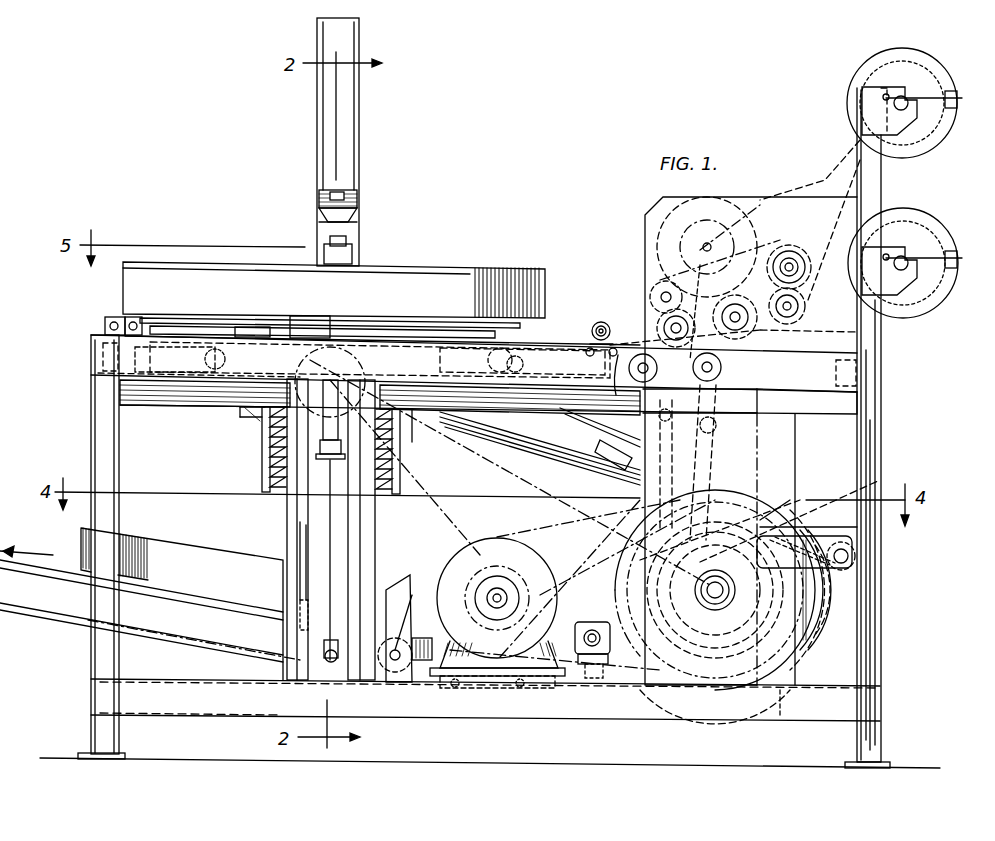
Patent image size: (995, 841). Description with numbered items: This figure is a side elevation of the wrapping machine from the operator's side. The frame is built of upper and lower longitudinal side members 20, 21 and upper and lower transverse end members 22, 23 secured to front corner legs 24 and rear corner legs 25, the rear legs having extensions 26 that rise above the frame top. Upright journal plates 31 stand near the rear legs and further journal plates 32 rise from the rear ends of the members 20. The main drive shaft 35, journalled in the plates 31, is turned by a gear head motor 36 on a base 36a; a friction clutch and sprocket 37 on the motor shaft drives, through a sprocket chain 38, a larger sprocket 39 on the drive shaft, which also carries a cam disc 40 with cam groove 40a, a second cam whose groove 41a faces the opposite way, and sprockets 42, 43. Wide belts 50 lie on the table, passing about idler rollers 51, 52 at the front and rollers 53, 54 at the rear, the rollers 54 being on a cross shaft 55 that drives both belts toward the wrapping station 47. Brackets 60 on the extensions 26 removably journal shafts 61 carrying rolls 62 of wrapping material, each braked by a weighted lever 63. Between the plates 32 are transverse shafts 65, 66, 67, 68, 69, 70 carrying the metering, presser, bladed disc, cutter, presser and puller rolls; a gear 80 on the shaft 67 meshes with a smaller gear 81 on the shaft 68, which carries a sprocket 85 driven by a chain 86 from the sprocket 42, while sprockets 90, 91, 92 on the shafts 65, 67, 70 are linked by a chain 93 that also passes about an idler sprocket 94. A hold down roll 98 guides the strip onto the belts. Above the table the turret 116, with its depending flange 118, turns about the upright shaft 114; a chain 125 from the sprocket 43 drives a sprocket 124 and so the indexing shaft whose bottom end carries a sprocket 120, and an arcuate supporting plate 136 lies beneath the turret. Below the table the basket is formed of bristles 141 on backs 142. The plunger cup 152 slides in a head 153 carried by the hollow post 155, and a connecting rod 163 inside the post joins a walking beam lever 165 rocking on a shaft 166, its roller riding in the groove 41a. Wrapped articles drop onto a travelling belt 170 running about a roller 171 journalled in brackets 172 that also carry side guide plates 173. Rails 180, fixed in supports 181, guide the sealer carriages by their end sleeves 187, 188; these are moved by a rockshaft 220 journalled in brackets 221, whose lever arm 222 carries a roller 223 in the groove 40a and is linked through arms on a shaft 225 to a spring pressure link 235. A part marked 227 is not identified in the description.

The upper longitudinal side members 20 is at (835, 371).
The lower longitudinal side members 21 is at (825, 724).
The upper transverse end members 22 is at (91, 357).
The lower transverse end members 23 is at (91, 692).
The front corner legs 24 is at (90, 650).
The rear corner legs 25 is at (881, 650).
The rear leg extensions 26 is at (884, 180).
The upright journal plates 31 is at (788, 463).
The upright journal plates 32 is at (842, 118).
The main drive shaft 35 is at (722, 596).
The driving motor 36 is at (462, 553).
The motor base 36a is at (482, 676).
The friction clutch and sprocket 37 is at (478, 588).
The sprocket chain 38 is at (523, 596).
The sprocket 39 is at (700, 668).
The cam disc 40 is at (832, 627).
The cam groove 40a is at (820, 604).
The cam groove 41a is at (862, 579).
The sprocket 42 is at (748, 610).
The sprocket 43 is at (709, 590).
The wrapping station 47 is at (252, 421).
The belts 50 is at (196, 334).
The idler roller 51 is at (140, 318).
The idler roller 52 is at (105, 318).
The roller 53 is at (537, 361).
The roller 54 is at (598, 364).
The cross shaft 55 is at (617, 382).
The brackets 60 is at (882, 119).
The shafts 61 is at (908, 100).
The roll of wrapping material 62 is at (935, 140).
The weighted lever 63 is at (950, 110).
The transverse shaft 65 is at (798, 270).
The transverse shaft 66 is at (798, 307).
The transverse shaft 67 is at (712, 245).
The transverse shaft 68 is at (735, 328).
The transverse shaft 69 is at (660, 295).
The transverse shaft 70 is at (668, 322).
The gear 80 is at (757, 198).
The gear 81 is at (762, 330).
The sprocket 85 is at (720, 372).
The chain 86 is at (757, 440).
The sprocket 90 is at (800, 257).
The sprocket 91 is at (690, 250).
The sprocket 92 is at (656, 368).
The chain 93 is at (766, 246).
The idler sprocket 94 is at (680, 462).
The hold down roll 98 is at (588, 327).
The upright shaft 114 is at (340, 248).
The turret 116 is at (246, 262).
The marginal flange 118 is at (334, 290).
The sprocket 120 is at (331, 513).
The sprocket 124 is at (304, 336).
The chain 125 is at (505, 507).
The arcuate supporting plate 136 is at (458, 330).
The bunches of bristles 141 is at (272, 480).
The back 142 is at (270, 462).
The plunger cup 152 is at (350, 216).
The head 153 is at (343, 140).
The hollow upright post 155 is at (318, 201).
The connecting rod 163 is at (300, 540).
The walking beam lever 165 is at (573, 620).
The transverse shaft 166 is at (590, 665).
The travelling belt 170 is at (180, 636).
The roller 171 is at (416, 642).
The brackets 172 is at (416, 578).
The side guide plates 173 is at (208, 556).
The longitudinal rails 180 is at (266, 336).
The supports 181 is at (98, 378).
The end sleeves 187 is at (184, 402).
The end sleeves 188 is at (484, 386).
The rockshaft 220 is at (850, 553).
The brackets 221 is at (840, 530).
The lever arm 222 is at (880, 480).
The roller 223 is at (795, 522).
The shaft 225 is at (750, 401).
The guide 227 is at (582, 458).
The spring pressure link 235 is at (565, 430).